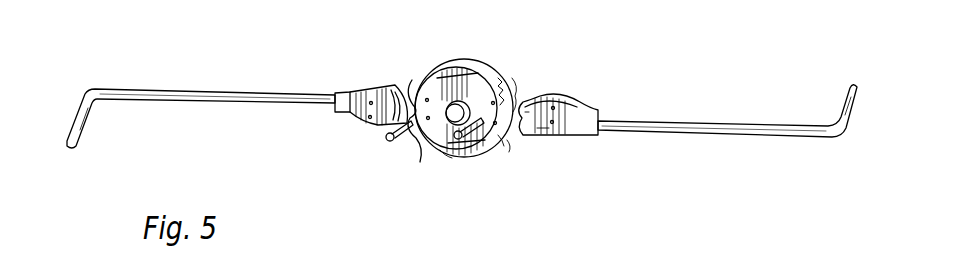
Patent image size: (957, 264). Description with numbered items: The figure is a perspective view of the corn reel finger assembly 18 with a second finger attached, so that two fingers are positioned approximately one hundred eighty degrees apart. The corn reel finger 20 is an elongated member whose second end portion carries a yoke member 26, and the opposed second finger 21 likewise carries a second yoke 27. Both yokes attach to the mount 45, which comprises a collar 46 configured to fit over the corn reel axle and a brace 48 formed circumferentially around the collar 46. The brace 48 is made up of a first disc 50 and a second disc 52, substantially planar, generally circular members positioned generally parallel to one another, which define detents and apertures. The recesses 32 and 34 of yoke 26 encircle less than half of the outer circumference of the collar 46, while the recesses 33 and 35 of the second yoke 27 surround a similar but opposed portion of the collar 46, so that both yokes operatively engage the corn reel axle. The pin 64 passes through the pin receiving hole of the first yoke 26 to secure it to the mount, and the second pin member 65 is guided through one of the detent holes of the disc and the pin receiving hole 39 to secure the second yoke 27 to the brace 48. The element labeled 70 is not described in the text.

The corn reel finger assembly 18 is at (595, 72).
The corn reel finger 20 is at (200, 91).
The second finger 21 is at (708, 132).
The yoke member 26 is at (354, 97).
The second yoke 27 is at (572, 123).
The first recess 32 is at (382, 92).
The recess of second yoke 33 is at (533, 94).
The recess 34 is at (408, 87).
The recess of second yoke 35 is at (521, 138).
The pin receiving hole 39 is at (543, 138).
The mount 45 is at (458, 168).
The collar 46 is at (430, 138).
The brace 48 is at (464, 154).
The first disc 50 is at (503, 143).
The second disc 52 is at (514, 148).
The pin 64 is at (388, 140).
The second pin member 65 is at (441, 162).
The notch 70 is at (516, 96).